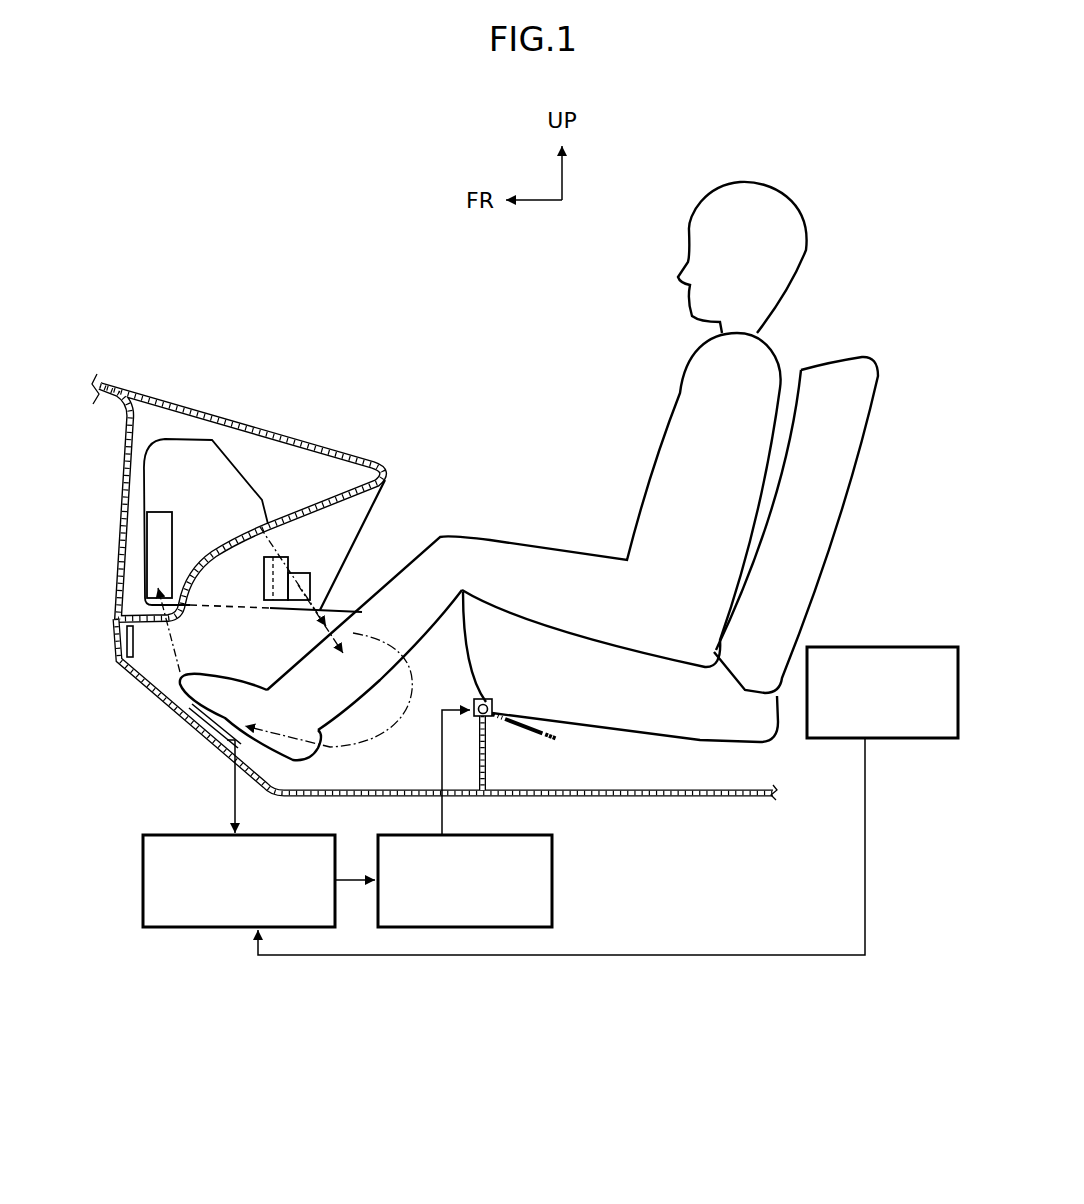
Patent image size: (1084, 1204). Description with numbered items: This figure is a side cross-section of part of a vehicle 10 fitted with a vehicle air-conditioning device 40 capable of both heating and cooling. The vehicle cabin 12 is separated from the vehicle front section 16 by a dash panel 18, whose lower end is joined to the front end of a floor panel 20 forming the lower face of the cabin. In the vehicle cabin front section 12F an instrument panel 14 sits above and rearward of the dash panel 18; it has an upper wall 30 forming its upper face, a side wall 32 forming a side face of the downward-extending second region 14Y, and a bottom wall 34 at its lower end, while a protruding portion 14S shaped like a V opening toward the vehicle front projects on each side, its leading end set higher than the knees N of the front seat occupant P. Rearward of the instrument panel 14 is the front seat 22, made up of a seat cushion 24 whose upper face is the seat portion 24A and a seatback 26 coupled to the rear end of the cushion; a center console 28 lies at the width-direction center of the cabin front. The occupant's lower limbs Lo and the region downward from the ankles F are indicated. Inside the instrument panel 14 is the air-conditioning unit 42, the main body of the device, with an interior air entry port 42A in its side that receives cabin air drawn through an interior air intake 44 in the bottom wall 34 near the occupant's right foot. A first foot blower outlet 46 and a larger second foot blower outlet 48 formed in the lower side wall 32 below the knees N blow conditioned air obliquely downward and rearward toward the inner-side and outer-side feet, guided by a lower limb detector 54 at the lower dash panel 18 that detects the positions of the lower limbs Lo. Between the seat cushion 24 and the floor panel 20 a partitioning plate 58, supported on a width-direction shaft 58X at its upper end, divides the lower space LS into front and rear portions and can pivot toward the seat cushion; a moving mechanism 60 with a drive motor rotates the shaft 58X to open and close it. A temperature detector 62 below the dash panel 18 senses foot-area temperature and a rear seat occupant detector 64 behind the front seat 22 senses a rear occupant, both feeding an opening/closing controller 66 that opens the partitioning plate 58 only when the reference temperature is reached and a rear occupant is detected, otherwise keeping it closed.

The vehicle 10 is at (458, 972).
The vehicle cabin 12 is at (545, 361).
The vehicle cabin front section 12F is at (316, 357).
The instrument panel 14 is at (335, 428).
The protruding portion 14S is at (353, 452).
The second region 14Y is at (372, 547).
The vehicle front section 16 is at (55, 501).
The dash panel 18 is at (122, 640).
The floor panel 20 is at (587, 789).
The front seat 22 is at (691, 598).
The seat cushion 24 is at (620, 712).
The seat portion 24A is at (612, 645).
The seatback 26 is at (800, 593).
The center console 28 is at (342, 612).
The upper wall 30 is at (206, 414).
The side wall 32 is at (357, 523).
The bottom wall 34 is at (112, 613).
The vehicle air-conditioning device 40 is at (169, 424).
The air-conditioning unit 42 is at (233, 458).
The interior air entry port 42A is at (157, 511).
The interior air intake 44 is at (155, 650).
The first foot blower outlet 46 is at (297, 572).
The second foot blower outlet 48 is at (283, 556).
The lower limb detector 54 is at (112, 600).
The partitioning plate 58 is at (530, 722).
The shaft 58X is at (486, 703).
The moving mechanism 60 is at (470, 835).
The temperature detector 62 is at (207, 707).
The rear seat occupant detector 64 is at (827, 740).
The opening/closing controller 66 is at (285, 835).
The front seat occupant P is at (650, 430).
The knees N is at (440, 536).
The region downward from the ankles F is at (222, 680).
The lower limbs Lo is at (290, 655).
The lower space LS is at (618, 781).